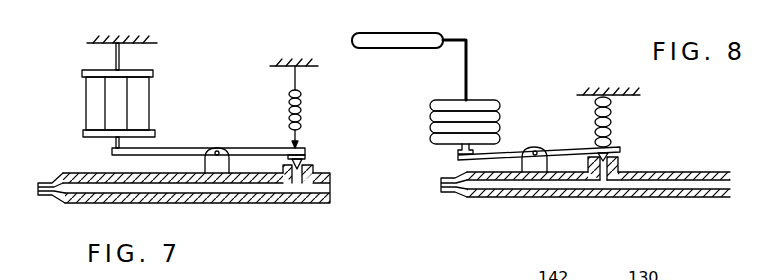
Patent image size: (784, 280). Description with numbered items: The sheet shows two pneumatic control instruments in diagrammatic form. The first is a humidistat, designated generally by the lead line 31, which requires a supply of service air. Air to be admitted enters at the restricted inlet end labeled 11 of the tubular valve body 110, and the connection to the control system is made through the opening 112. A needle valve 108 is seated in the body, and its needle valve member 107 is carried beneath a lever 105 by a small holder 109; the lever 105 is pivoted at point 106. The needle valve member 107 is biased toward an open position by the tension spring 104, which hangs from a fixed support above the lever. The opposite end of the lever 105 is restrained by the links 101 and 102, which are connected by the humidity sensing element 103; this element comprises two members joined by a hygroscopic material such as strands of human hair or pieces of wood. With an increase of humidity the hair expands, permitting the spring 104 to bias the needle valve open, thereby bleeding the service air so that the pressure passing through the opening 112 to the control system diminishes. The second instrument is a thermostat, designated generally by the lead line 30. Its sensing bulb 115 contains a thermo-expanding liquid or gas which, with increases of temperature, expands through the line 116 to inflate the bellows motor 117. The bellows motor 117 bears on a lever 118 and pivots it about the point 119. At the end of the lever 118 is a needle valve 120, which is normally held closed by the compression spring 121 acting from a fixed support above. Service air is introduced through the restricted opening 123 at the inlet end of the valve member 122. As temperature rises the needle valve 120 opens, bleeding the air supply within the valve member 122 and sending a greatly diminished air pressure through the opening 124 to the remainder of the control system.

In FIG. 7, the nozzle 11 is at (36, 190).
In FIG. 7, the valve assembly 31 is at (190, 114).
In FIG. 7, the link 101 is at (121, 60).
In FIG. 7, the link 102 is at (116, 143).
In FIG. 7, the humidity sensing element 103 is at (86, 97).
In FIG. 7, the tension spring 104 is at (301, 116).
In FIG. 7, the lever 105 is at (178, 150).
In FIG. 7, the pivot point 106 is at (223, 151).
In FIG. 7, the needle valve member 107 is at (303, 160).
In FIG. 7, the needle valve 108 is at (314, 168).
In FIG. 7, the valve holder 109 is at (306, 151).
In FIG. 7, the tube 110 is at (222, 204).
In FIG. 7, the opening 112 is at (325, 190).
In FIG. 8, the valve assembly 30 is at (549, 92).
In FIG. 8, the sensing bulb 115 is at (418, 35).
In FIG. 8, the line 116 is at (469, 68).
In FIG. 8, the bellows motor 117 is at (500, 104).
In FIG. 8, the lever 118 is at (503, 153).
In FIG. 8, the pivot point 119 is at (540, 151).
In FIG. 8, the needle valve 120 is at (610, 154).
In FIG. 8, the compression spring 121 is at (612, 121).
In FIG. 8, the valve member 122 is at (563, 199).
In FIG. 8, the restricted opening 123 is at (447, 194).
In FIG. 8, the opening 124 is at (730, 199).